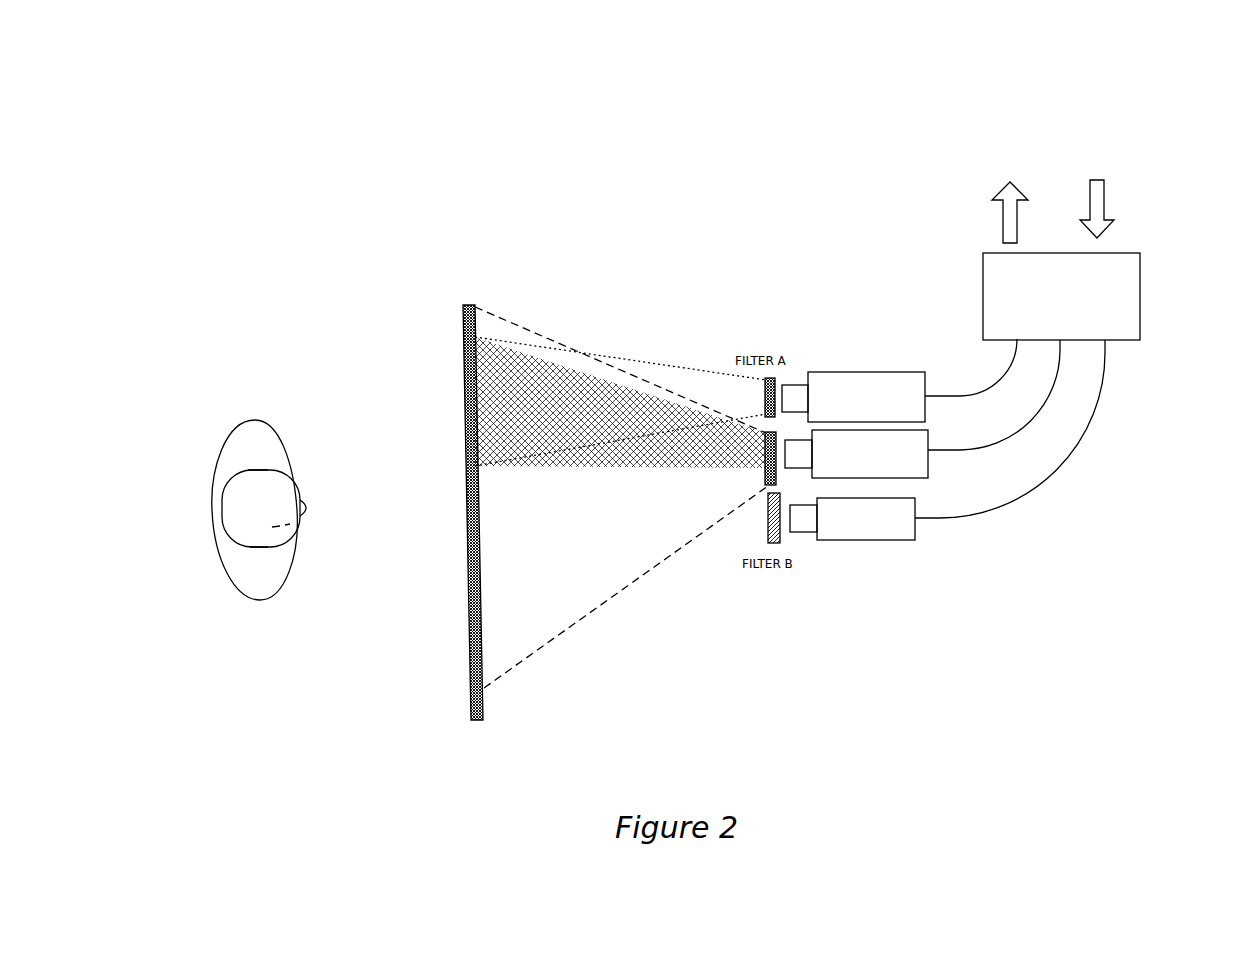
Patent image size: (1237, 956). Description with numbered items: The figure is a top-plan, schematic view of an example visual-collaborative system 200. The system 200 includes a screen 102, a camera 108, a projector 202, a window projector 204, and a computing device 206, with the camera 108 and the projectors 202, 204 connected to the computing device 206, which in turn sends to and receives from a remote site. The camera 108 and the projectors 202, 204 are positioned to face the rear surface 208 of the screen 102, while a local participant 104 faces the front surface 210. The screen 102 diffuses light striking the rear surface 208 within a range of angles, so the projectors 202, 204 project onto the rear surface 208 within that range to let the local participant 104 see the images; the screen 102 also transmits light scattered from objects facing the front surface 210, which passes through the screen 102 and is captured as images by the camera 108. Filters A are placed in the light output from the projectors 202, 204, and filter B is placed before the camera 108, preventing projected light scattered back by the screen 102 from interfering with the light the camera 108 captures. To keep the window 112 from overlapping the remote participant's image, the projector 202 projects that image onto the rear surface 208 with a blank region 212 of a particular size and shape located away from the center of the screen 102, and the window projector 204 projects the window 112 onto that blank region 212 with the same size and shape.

The visual-collaborative system 200 is at (978, 68).
The screen 102 is at (468, 712).
The local participant 104 is at (267, 590).
The camera 108 is at (893, 540).
The window 112 is at (660, 365).
The projector 202 is at (928, 470).
The window projector 204 is at (882, 372).
The computing device 206 is at (1142, 307).
The rear surface 208 is at (484, 572).
The front surface 210 is at (462, 572).
The blank region 212 is at (642, 455).